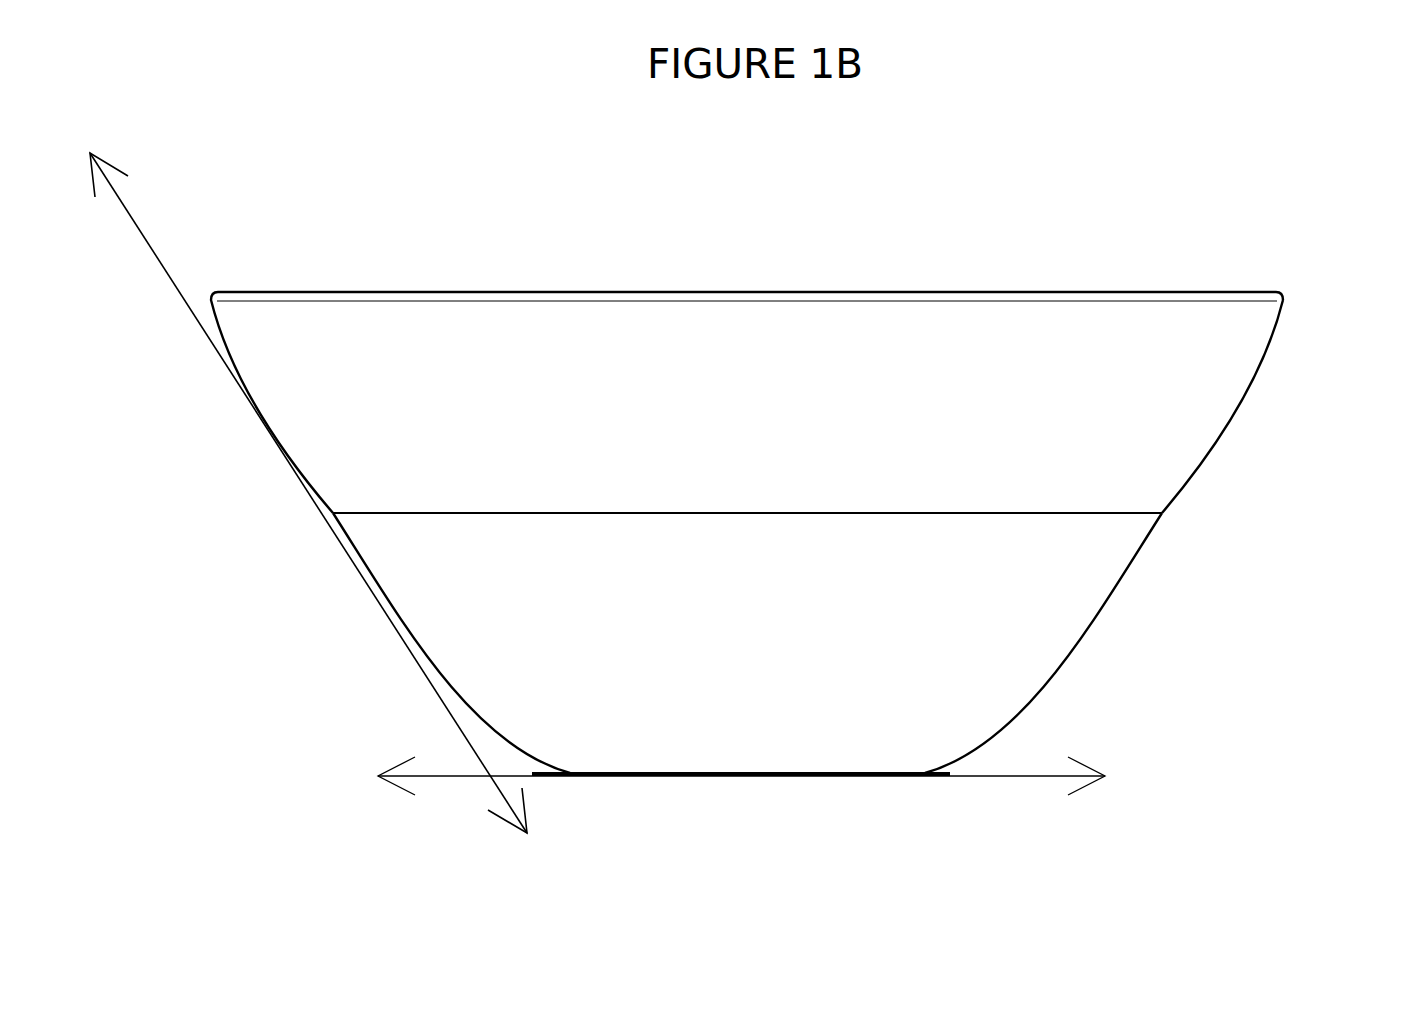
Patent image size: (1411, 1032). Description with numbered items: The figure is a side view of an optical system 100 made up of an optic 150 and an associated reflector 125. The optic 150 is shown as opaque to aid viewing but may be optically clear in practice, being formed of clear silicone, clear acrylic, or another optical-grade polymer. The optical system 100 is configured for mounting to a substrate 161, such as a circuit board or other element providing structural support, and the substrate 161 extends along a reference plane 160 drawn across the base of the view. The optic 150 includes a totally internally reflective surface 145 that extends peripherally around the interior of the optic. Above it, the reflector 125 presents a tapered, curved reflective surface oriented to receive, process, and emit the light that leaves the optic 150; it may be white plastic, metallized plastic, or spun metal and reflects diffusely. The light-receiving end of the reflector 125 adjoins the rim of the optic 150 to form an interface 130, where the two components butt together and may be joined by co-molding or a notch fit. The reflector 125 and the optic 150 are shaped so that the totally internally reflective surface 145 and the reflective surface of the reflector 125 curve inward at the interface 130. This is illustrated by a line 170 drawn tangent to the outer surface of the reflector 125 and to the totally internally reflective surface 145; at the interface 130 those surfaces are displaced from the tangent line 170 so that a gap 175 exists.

The optical system 100 is at (1235, 205).
The reflector 125 is at (1275, 377).
The interface 130 is at (1190, 521).
The totally internally reflective surface 145 is at (857, 616).
The optic 150 is at (1157, 628).
The reference plane 160 is at (1015, 778).
The substrate 161 is at (912, 780).
The tangent line 170 is at (497, 793).
The gap 175 is at (323, 516).